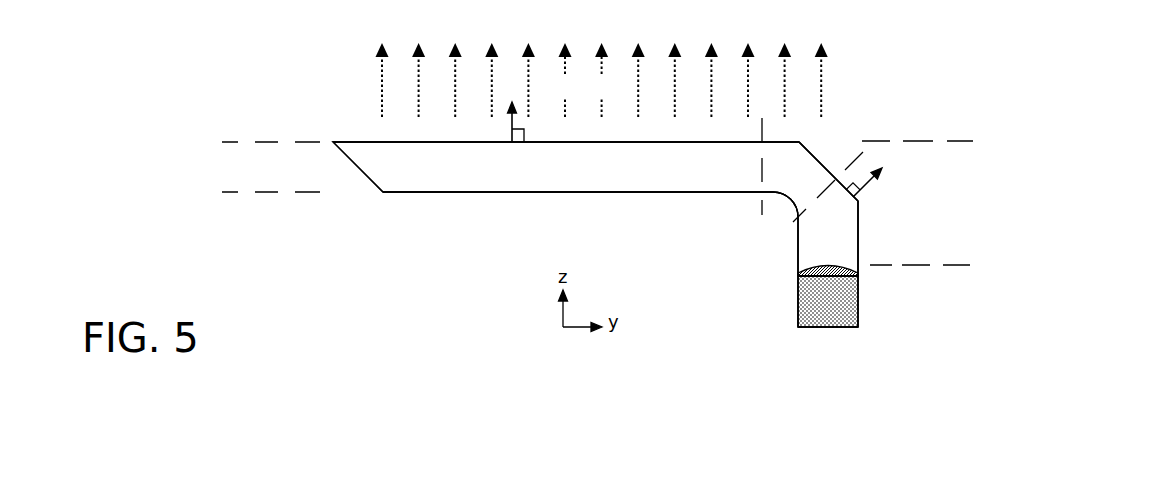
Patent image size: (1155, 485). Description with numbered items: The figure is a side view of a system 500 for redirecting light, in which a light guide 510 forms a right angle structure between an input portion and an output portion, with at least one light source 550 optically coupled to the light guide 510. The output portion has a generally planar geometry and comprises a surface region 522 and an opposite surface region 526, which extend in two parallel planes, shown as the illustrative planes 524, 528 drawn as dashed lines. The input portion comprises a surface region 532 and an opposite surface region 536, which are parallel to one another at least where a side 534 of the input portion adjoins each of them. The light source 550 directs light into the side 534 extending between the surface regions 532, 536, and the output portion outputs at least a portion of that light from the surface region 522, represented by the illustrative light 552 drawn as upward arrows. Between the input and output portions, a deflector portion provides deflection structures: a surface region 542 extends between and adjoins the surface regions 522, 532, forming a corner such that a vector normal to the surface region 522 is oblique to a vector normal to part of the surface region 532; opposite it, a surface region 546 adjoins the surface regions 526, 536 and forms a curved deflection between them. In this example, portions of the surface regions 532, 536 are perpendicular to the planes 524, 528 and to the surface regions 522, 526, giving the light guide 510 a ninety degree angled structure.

The system 500 is at (1099, 106).
The light guide 510 is at (616, 177).
The surface region 522 is at (369, 141).
The plane 524 is at (259, 141).
The surface region 526 is at (453, 193).
The plane 528 is at (260, 193).
The surface region 532 is at (863, 247).
The side 534 is at (837, 263).
The surface region 536 is at (796, 246).
The surface region 542 is at (822, 162).
The surface region 546 is at (789, 201).
The light source 550 is at (845, 304).
The light 552 is at (602, 96).